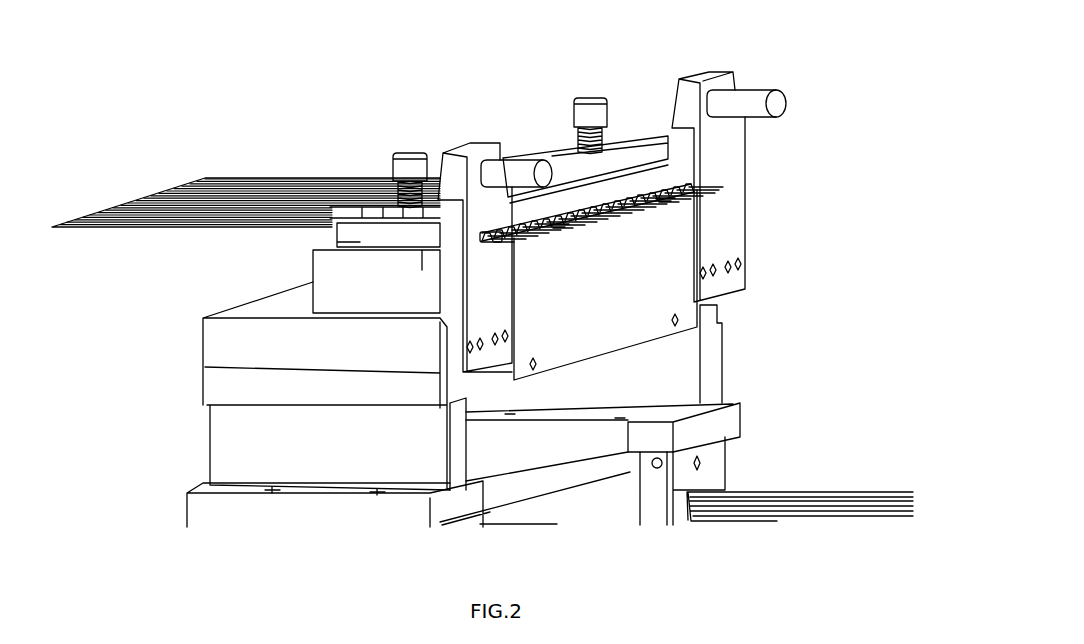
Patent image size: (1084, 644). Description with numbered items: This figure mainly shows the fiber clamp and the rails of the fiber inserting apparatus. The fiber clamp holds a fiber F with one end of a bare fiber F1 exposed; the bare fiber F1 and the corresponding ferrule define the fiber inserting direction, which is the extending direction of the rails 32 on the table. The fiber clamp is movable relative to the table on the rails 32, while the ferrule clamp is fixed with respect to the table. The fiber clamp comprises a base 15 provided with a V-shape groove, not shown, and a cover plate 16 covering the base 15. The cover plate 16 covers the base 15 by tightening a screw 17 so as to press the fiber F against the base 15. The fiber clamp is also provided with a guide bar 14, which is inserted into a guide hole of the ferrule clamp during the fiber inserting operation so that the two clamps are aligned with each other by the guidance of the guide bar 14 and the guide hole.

The fiber F is at (253, 177).
The bare fiber F1 is at (707, 190).
The guide bar 14 is at (755, 102).
The base 15 is at (333, 243).
The cover plate 16 is at (638, 167).
The screw 17 is at (583, 102).
The rails 32 is at (867, 492).